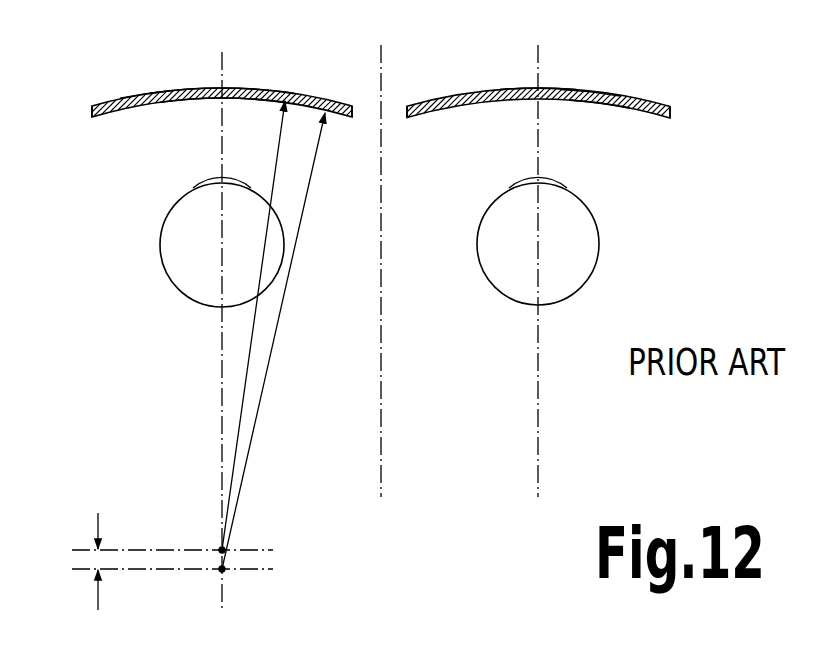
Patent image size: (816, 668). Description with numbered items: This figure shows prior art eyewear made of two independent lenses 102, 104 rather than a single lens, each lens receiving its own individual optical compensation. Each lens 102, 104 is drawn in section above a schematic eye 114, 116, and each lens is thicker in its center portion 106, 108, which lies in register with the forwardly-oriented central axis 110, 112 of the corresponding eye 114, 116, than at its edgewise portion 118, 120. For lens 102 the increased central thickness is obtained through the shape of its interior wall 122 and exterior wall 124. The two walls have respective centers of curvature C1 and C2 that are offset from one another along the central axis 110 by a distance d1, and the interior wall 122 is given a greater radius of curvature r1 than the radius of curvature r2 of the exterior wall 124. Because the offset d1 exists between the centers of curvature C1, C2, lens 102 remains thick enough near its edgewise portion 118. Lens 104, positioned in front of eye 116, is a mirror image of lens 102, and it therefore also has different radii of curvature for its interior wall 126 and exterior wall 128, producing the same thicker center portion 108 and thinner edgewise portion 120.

The lens 102 is at (120, 112).
The lens 104 is at (645, 96).
The center portion 106 is at (210, 88).
The center portion 108 is at (530, 89).
The central axis 110 is at (220, 145).
The central axis 112 is at (538, 130).
The eye 114 is at (160, 250).
The eye 116 is at (597, 225).
The edgewise portion 118 is at (94, 107).
The edgewise portion 120 is at (432, 101).
The interior wall 122 is at (196, 99).
The exterior wall 124 is at (150, 92).
The interior wall 126 is at (612, 107).
The exterior wall 128 is at (576, 90).
The radius of curvature r1 is at (288, 278).
The radius of curvature r2 is at (252, 333).
The center of curvature C1 is at (225, 571).
The center of curvature C2 is at (220, 548).
The distance d1 is at (98, 600).